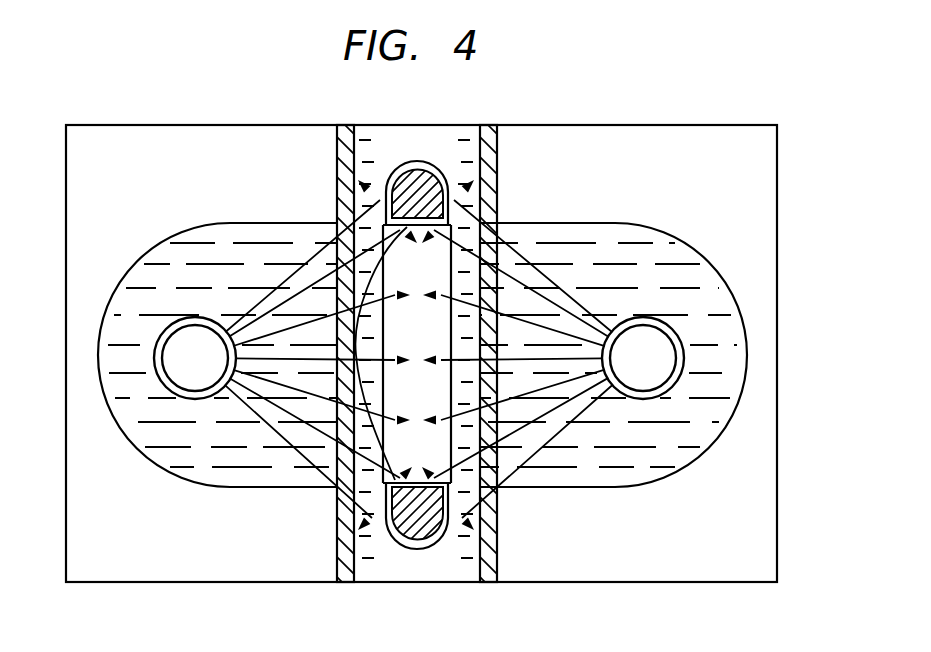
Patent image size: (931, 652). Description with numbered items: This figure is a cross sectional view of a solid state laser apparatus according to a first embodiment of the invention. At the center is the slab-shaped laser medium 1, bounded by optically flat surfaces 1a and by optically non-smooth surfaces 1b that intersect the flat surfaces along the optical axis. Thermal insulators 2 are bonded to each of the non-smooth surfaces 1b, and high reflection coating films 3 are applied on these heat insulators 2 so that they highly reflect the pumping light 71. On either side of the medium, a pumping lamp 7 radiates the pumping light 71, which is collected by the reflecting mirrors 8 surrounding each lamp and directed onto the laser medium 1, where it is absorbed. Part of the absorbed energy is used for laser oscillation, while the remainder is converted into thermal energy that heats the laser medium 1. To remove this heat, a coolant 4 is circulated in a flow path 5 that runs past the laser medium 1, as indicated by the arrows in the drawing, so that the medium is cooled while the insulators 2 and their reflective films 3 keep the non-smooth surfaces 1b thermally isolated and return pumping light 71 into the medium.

The laser medium 1 is at (423, 338).
The optically flat surfaces 1a is at (445, 410).
The optically non-smooth surfaces 1b is at (355, 345).
The thermal insulators 2 is at (407, 183).
The high reflection coating films 3 is at (420, 160).
The coolant 4 is at (463, 227).
The flow path 5 is at (483, 300).
The pumping lamp 7 is at (183, 353).
The reflecting mirrors 8 is at (127, 268).
The pumping light 71 is at (295, 447).